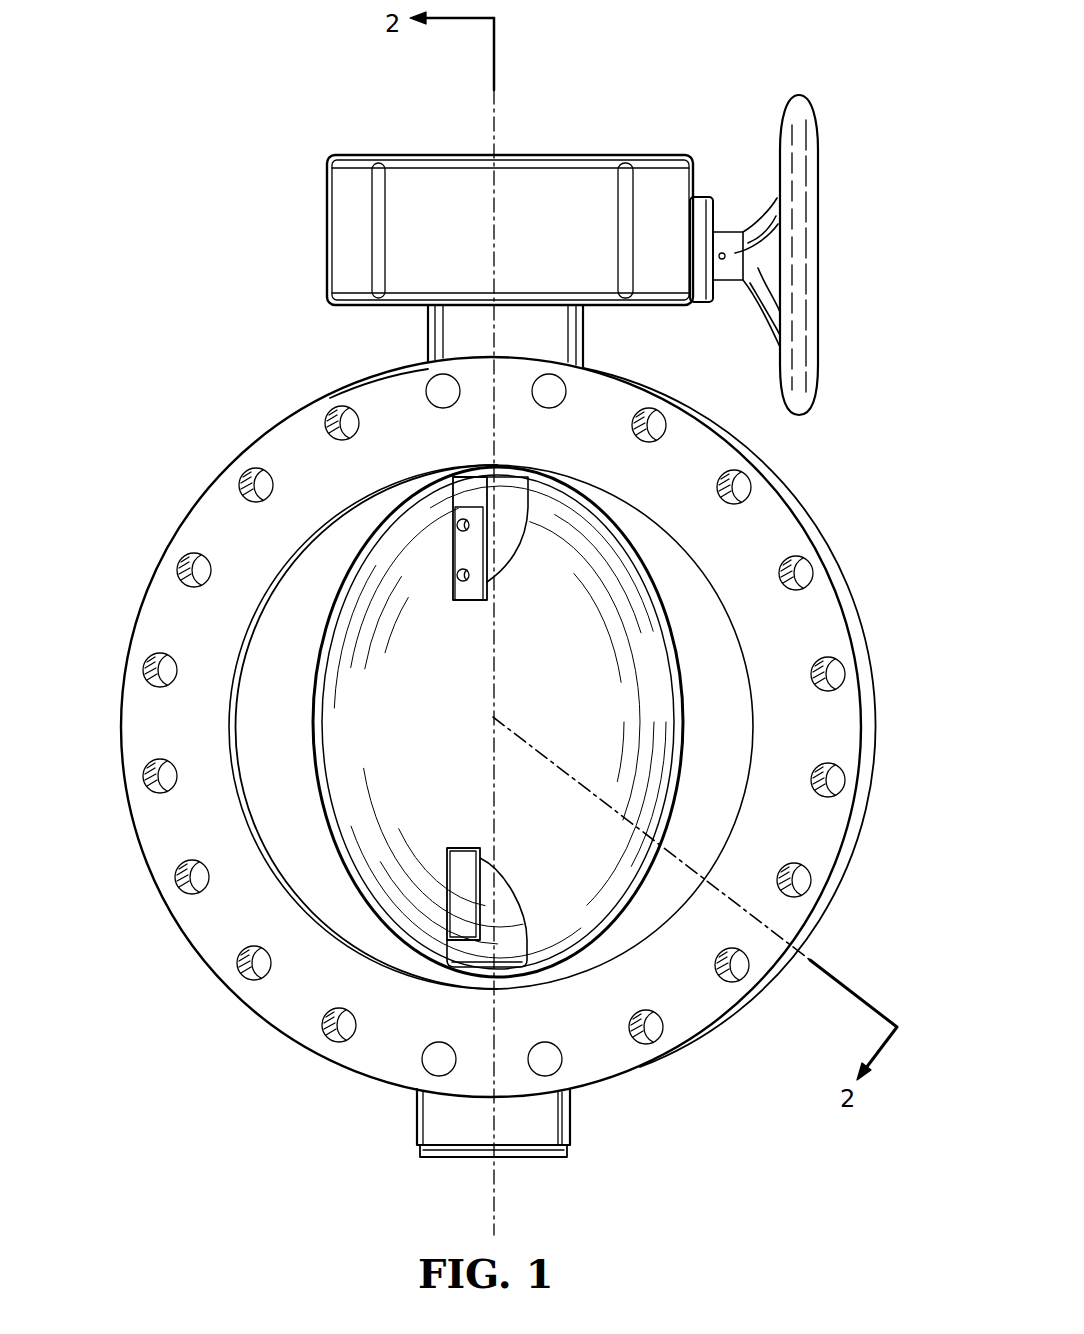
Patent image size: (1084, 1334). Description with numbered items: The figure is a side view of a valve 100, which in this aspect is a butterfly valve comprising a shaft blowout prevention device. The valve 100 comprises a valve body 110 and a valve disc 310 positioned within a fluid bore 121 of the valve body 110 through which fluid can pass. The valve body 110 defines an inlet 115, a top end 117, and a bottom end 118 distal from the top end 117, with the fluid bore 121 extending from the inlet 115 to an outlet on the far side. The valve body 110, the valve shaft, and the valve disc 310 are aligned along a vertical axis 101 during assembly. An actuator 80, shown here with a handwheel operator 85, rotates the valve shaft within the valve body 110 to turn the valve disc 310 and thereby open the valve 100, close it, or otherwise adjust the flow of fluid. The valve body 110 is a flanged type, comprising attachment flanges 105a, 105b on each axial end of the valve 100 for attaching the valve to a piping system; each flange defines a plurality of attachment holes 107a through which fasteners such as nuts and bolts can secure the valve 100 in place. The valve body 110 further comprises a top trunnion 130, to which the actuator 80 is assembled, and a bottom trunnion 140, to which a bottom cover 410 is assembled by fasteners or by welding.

The valve 100 is at (203, 106).
The vertical axis 101 is at (494, 118).
The top end 117 is at (540, 298).
The handwheel operator 85 is at (818, 150).
The actuator 80 is at (327, 235).
The top trunnion 130 is at (427, 332).
The attachment holes 107a is at (181, 562).
The attachment flange 105b is at (843, 547).
The attachment flange 105a is at (828, 635).
The fluid bore 121 is at (250, 705).
The inlet 115 is at (743, 798).
The valve disc 310 is at (405, 838).
The valve body 110 is at (437, 1117).
The bottom trunnion 140 is at (572, 1122).
The bottom end 118 is at (453, 1155).
The bottom cover 410 is at (553, 1158).